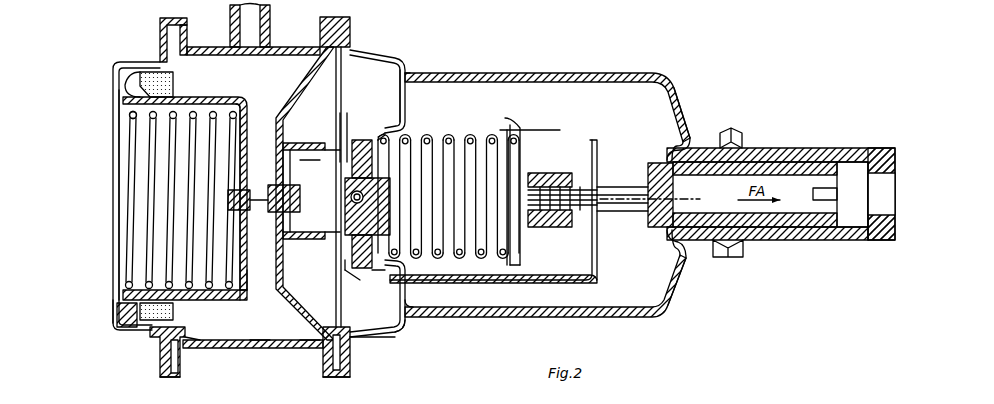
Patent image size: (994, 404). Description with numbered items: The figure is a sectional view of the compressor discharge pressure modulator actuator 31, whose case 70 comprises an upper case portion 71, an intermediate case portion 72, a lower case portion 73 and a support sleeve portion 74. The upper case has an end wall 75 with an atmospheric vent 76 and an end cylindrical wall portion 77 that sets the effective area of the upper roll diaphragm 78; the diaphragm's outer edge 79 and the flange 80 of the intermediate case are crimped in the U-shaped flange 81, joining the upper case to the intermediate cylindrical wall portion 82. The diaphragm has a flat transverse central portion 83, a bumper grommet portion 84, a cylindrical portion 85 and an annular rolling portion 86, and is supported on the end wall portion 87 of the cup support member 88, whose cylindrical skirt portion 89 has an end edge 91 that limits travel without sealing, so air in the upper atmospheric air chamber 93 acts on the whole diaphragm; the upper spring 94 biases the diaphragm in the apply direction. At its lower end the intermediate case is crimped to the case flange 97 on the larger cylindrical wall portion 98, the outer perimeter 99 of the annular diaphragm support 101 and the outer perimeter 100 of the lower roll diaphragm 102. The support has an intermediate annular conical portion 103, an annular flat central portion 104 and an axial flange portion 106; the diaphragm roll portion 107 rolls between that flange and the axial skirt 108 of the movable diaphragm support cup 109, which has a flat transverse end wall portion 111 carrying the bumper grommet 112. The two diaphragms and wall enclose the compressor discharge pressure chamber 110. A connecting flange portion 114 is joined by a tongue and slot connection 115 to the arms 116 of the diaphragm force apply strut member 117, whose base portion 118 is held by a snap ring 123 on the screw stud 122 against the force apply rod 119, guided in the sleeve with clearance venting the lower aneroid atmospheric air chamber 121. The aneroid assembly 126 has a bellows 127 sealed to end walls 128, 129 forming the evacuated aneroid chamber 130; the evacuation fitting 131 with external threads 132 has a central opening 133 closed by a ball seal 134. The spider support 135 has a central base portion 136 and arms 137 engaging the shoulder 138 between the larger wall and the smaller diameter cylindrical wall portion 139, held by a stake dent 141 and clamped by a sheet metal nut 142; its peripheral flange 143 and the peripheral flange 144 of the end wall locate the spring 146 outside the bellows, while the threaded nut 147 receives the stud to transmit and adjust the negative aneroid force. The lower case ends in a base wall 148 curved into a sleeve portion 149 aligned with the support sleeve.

The compressor discharge pressure modulator actuator 31 is at (657, 322).
The case 70 is at (505, 322).
The upper case portion 71 is at (128, 226).
The intermediate case portion 72 is at (226, 348).
The lower case portion 73 is at (620, 75).
The support sleeve portion 74 is at (832, 236).
The end wall 75 is at (119, 203).
The atmospheric vent 76 is at (113, 310).
The end cylindrical wall portion 77 is at (150, 328).
The upper roll diaphragm 78 is at (242, 303).
The outer edge 79 is at (172, 348).
The flange 80 is at (197, 348).
The U-shaped flange 81 is at (160, 376).
The intermediate cylindrical wall portion 82 is at (258, 348).
The flat transverse central portion 83 is at (250, 284).
The bumper grommet portion 84 is at (272, 185).
The cylindrical portion 85 is at (196, 300).
The annular rolling portion 86 is at (119, 322).
The end wall portion 87 is at (246, 142).
The cup support member 88 is at (236, 98).
The cylindrical skirt portion 89 is at (205, 100).
The end edge 91 is at (120, 105).
The upper atmospheric air chamber 93 is at (140, 184).
The upper spring 94 is at (150, 118).
The case flange 97 is at (330, 374).
The larger cylindrical wall portion 98 is at (360, 338).
The outer perimeter 99 is at (323, 372).
The outer perimeter 100 is at (302, 354).
The annular diaphragm support 101 is at (335, 340).
The lower roll diaphragm 102 is at (302, 318).
The intermediate annular conical portion 103 is at (298, 300).
The annular flat central portion 104 is at (272, 242).
The axial flange portion 106 is at (306, 248).
The diaphragm roll portion 107 is at (252, 212).
The axial skirt 108 is at (292, 152).
The movable diaphragm support cup 109 is at (310, 146).
The compressor discharge pressure chamber 110 is at (193, 62).
The flat transverse end wall portion 111 is at (298, 225).
The bumper grommet 112 is at (230, 22).
The connecting flange portion 114 is at (342, 146).
The tongue and slot connection 115 is at (342, 275).
The arms 116 is at (530, 284).
The diaphragm force apply strut member 117 is at (598, 283).
The base portion 118 is at (597, 243).
The force apply rod 119 is at (777, 220).
The lower aneroid atmospheric air chamber 121 is at (535, 100).
The screw stud 122 is at (538, 224).
The snap ring 123 is at (600, 190).
The aneroid assembly 126 is at (500, 103).
The bellows 127 is at (468, 138).
The end wall 128 is at (412, 140).
The end wall 129 is at (521, 165).
The aneroid chamber 130 is at (518, 158).
The evacuation fitting 131 is at (361, 165).
The external threads 132 is at (355, 288).
The central opening 133 is at (392, 190).
The ball seal 134 is at (350, 197).
The spider support 135 is at (380, 128).
The central base portion 136 is at (379, 298).
The arms 137 is at (406, 92).
The shoulder 138 is at (415, 72).
The smaller diameter cylindrical wall portion 139 is at (468, 73).
The stake dent 141 is at (380, 57).
The sheet metal nut 142 is at (352, 289).
The peripheral flange 143 is at (372, 262).
The peripheral flange 144 is at (512, 250).
The spring 146 is at (520, 272).
The threaded nut 147 is at (540, 226).
The base wall 148 is at (690, 282).
The sleeve portion 149 is at (722, 246).